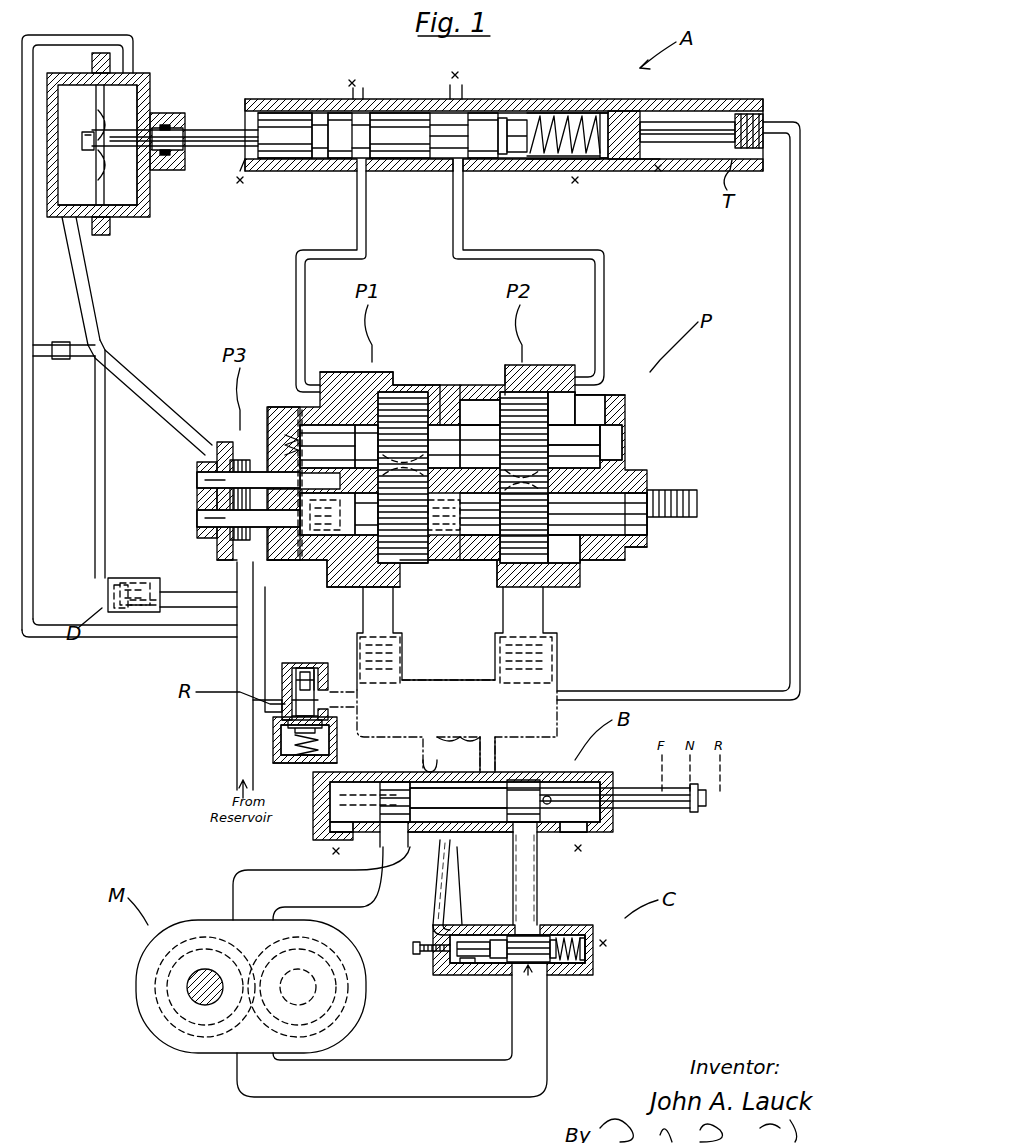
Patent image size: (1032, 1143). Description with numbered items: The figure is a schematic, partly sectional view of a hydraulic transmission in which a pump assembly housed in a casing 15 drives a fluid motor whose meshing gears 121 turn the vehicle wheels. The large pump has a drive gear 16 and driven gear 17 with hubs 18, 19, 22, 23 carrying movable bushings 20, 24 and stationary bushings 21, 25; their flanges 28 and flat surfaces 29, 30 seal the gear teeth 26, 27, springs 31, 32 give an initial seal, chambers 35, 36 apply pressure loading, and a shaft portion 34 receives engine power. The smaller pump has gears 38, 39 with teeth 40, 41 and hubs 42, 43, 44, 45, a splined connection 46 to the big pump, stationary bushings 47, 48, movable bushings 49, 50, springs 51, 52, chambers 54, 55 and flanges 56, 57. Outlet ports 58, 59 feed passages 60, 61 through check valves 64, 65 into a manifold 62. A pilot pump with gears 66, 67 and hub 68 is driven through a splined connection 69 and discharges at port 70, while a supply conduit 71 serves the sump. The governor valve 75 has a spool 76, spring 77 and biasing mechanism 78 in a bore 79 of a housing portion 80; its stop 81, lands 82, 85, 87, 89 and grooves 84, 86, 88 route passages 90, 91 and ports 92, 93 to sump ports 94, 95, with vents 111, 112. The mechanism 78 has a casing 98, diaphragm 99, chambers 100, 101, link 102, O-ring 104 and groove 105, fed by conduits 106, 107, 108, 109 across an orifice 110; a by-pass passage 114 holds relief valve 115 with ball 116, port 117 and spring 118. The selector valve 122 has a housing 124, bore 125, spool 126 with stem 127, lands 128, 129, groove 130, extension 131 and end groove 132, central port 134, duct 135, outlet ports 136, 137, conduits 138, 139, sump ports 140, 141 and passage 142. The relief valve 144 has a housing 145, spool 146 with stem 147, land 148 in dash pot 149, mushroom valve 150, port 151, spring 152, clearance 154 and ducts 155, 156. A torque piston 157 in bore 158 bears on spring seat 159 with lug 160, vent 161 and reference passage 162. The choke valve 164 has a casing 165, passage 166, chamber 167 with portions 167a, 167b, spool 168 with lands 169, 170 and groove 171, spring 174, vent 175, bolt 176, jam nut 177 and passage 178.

The housing 15 is at (395, 385).
The drive gear 16 is at (530, 523).
The driven gear 17 is at (530, 438).
The hub 18 is at (648, 525).
The hub 19 is at (478, 565).
The movable pumping seal bushing 20 is at (600, 558).
The stationary pumping seal bushing 21 is at (455, 565).
The hub 22 is at (612, 412).
The hub 23 is at (450, 385).
The movable pumping seal bushing 24 is at (610, 386).
The stationary pumping seal bushing 25 is at (468, 385).
The pump gear teeth 26 is at (525, 588).
The pump gear teeth 27 is at (505, 385).
The annular flange 28 is at (478, 370).
The flat engagement surface 29 is at (490, 460).
The flat engagement surface 30 is at (548, 455).
The compression spring 31 is at (625, 550).
The compression spring 32 is at (612, 437).
The shaft portion 34 is at (700, 503).
The pressure loading chamber 35 is at (556, 530).
The pressure loading chamber 36 is at (548, 440).
The drive gear 38 is at (380, 526).
The driven gear 39 is at (380, 440).
The gear teeth 40 is at (398, 588).
The gear teeth 41 is at (388, 385).
The hub 42 is at (428, 565).
The hub 43 is at (290, 580).
The hub 44 is at (432, 385).
The hub 45 is at (300, 412).
The splined connection 46 is at (470, 520).
The stationary pumping seal bushing 47 is at (405, 525).
The stationary pumping seal bushing 48 is at (410, 456).
The movable pumping seal bushing 49 is at (330, 515).
The movable pumping seal bushing 50 is at (335, 456).
The compression spring 51 is at (298, 560).
The compression spring 52 is at (280, 440).
The pressure loading chamber 54 is at (330, 530).
The pressure loading chamber 55 is at (335, 443).
The pumping seal flange 56 is at (340, 588).
The pumping seal flange 57 is at (345, 372).
The outlet port 58 is at (495, 528).
The outlet port 59 is at (388, 450).
The passage 60 is at (548, 612).
The passage 61 is at (398, 622).
The manifold 62 is at (475, 690).
The check valve 64 is at (552, 642).
The check valve 65 is at (408, 650).
The pump gear 66 is at (222, 555).
The pump gear 67 is at (225, 440).
The hub 68 is at (268, 560).
The splined connection 69 is at (315, 560).
The outlet port 70 is at (197, 500).
The supply conduit 71 is at (237, 770).
The governor valve 75 is at (268, 95).
The governor spool 76 is at (408, 110).
The compression spring 77 is at (530, 113).
The differential pressure biasing mechanism 78 is at (147, 62).
The bore 79 is at (556, 113).
The housing portion 80 is at (505, 113).
The reduced diameter portion 81 is at (512, 160).
The land 82 is at (486, 139).
The groove 84 is at (430, 160).
The land 85 is at (410, 139).
The groove 86 is at (370, 113).
The land 87 is at (346, 139).
The groove 88 is at (318, 113).
The land 89 is at (290, 139).
The passage 90 is at (592, 252).
The passage 91 is at (295, 256).
The inlet port 92 is at (455, 175).
The inlet port 93 is at (358, 175).
The outlet port 94 is at (470, 99).
The outlet port 95 is at (348, 98).
The casing 98 is at (150, 80).
The flexible diaphragm 99 is at (93, 107).
The first pressure chamber 100 is at (75, 73).
The second pressure chamber 101 is at (140, 190).
The compression link 102 is at (215, 130).
The O-ring 104 is at (170, 160).
The annular groove 105 is at (170, 113).
The conduit 106 is at (165, 400).
The branch conduit 107 is at (80, 275).
The branch conduit 108 is at (33, 290).
The branch conduit 109 is at (24, 515).
The orifice 110 is at (62, 360).
The vent port 111 is at (258, 171).
The vent port 112 is at (562, 171).
The by-pass passage 114 is at (105, 465).
The pressure relief valve 115 is at (148, 575).
The ball check member 116 is at (122, 612).
The port 117 is at (125, 578).
The compression spring 118 is at (158, 610).
The meshing gear 121 is at (150, 986).
The four-way selector valve 122 is at (625, 842).
The housing 124 is at (610, 772).
The bore 125 is at (495, 770).
The selector spool 126 is at (478, 840).
The stem portion 127 is at (440, 832).
The land 128 is at (420, 772).
The land 129 is at (522, 780).
The annular groove 130 is at (432, 782).
The axially extending portion 131 is at (668, 810).
The end groove 132 is at (705, 808).
The central port 134 is at (462, 765).
The duct 135 is at (430, 765).
The outlet port 136 is at (394, 845).
The outlet port 137 is at (545, 850).
The conduit 138 is at (275, 875).
The conduit 139 is at (283, 1097).
The sump return port 140 is at (330, 840).
The sump return port 141 is at (590, 835).
The interconnect passage 142 is at (380, 797).
The maximum pressure relief valve 144 is at (284, 663).
The housing 145 is at (298, 765).
The valve spool 146 is at (296, 710).
The stem portion 147 is at (282, 700).
The land portion 148 is at (305, 668).
The dash pot 149 is at (322, 668).
The mushroom valve portion 150 is at (288, 728).
The outlet port 151 is at (322, 745).
The compression spring 152 is at (278, 763).
The restricted clearance 154 is at (322, 680).
The duct 155 is at (360, 705).
The duct 156 is at (285, 722).
The torque sensing piston 157 is at (730, 113).
The bore 158 is at (684, 122).
The spring seat member 159 is at (622, 100).
The stop lug 160 is at (604, 99).
The vent port 161 is at (645, 171).
The reference passage 162 is at (790, 255).
The choke valve 164 is at (598, 975).
The housing 165 is at (593, 968).
The transverse passage 166 is at (548, 925).
The longitudinal chamber 167 is at (572, 975).
The chamber portion 167a is at (580, 930).
The reduced diameter chamber portion 167b is at (470, 975).
The choke valve spool 168 is at (518, 975).
The land 169 is at (505, 935).
The land 170 is at (460, 963).
The groove 171 is at (468, 935).
The compression spring 174 is at (590, 923).
The vent port 175 is at (596, 943).
The adjustment bolt 176 is at (413, 942).
The jam nut 177 is at (420, 956).
The passage 178 is at (438, 890).